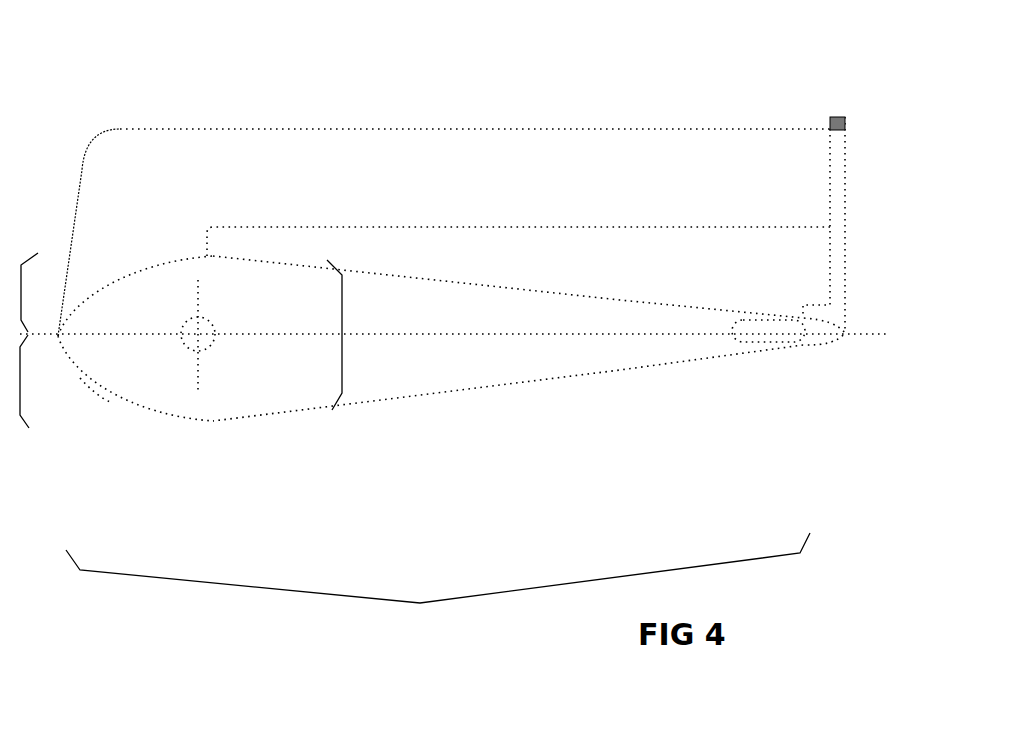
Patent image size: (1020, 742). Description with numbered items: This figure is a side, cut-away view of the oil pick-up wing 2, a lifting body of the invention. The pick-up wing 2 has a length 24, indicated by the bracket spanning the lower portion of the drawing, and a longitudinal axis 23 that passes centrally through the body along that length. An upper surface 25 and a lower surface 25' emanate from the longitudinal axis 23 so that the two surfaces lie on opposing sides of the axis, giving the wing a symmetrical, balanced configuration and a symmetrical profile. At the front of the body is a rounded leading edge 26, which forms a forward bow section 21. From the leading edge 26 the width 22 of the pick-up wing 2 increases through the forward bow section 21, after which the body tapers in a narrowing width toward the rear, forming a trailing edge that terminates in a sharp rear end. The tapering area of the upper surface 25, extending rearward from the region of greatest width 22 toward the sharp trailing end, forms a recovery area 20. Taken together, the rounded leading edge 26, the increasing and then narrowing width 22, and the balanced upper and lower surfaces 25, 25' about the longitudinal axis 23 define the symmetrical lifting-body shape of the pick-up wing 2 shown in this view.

The recovery area 20 is at (730, 280).
The forward bow section 21 is at (149, 312).
The oil pick-up wing 2 is at (223, 336).
The width 22 is at (342, 340).
The longitudinal axis 23 is at (598, 335).
The length 24 is at (420, 603).
The upper surface 25 is at (37, 173).
The lower surface 25' is at (43, 427).
The rounded leading edge 26 is at (97, 387).